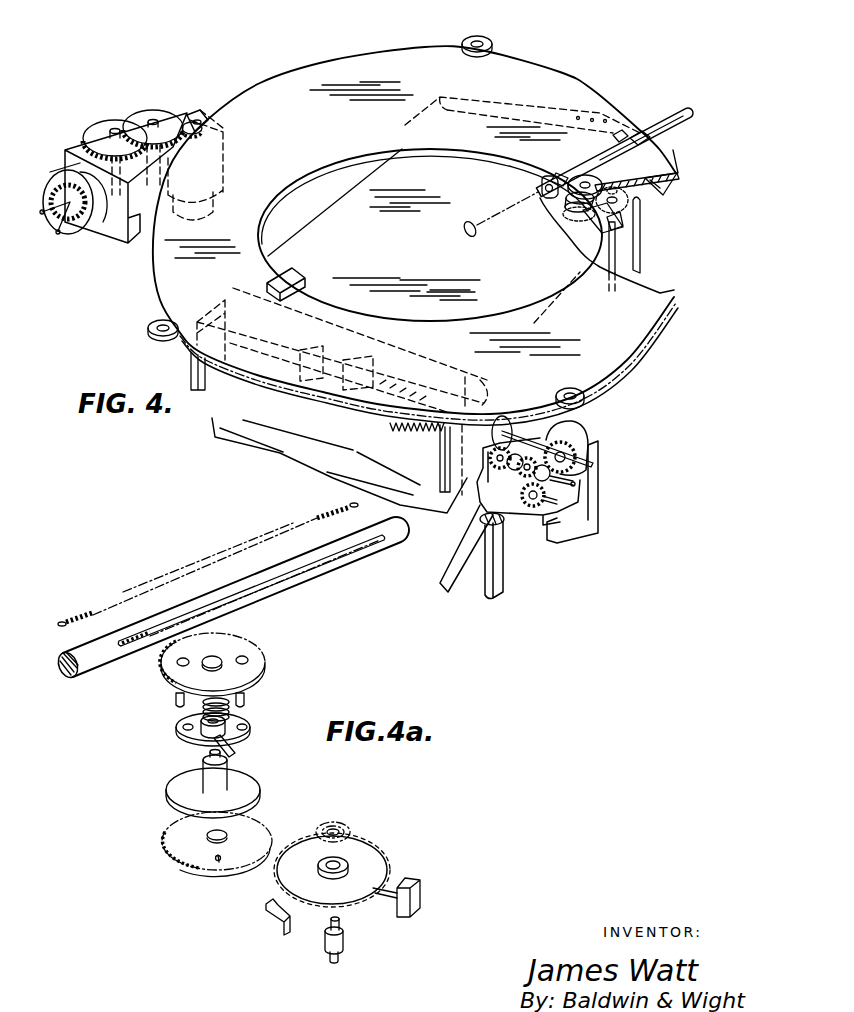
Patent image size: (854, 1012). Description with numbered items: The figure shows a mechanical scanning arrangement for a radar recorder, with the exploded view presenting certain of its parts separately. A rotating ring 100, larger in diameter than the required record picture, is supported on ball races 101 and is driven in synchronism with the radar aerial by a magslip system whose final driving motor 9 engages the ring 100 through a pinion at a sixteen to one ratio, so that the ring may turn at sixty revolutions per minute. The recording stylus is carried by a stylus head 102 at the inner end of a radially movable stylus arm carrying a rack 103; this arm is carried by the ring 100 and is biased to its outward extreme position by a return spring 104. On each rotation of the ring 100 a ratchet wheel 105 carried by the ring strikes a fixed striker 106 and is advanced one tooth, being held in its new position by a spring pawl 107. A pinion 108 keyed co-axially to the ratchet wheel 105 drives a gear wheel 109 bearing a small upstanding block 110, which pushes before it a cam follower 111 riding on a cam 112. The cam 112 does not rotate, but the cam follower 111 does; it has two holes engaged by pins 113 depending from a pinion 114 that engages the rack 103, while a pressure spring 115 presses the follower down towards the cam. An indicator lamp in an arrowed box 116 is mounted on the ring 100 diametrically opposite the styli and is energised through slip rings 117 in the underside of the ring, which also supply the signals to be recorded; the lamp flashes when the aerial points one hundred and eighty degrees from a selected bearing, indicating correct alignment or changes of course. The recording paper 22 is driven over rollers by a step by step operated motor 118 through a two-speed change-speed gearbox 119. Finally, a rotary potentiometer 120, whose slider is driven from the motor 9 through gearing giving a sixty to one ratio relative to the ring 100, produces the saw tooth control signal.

In FIG. 4, the final driving motor 9 is at (224, 165).
In FIG. 4, the recording paper 22 is at (212, 422).
In FIG. 4, the ring 100 is at (627, 358).
In FIG. 4, the ball races 101 is at (494, 43).
In FIG. 4, the stylus head 102 is at (541, 186).
In FIG. 4, the rack 103 is at (609, 163).
In FIG. 4a, the rack 103 is at (133, 643).
In FIG. 4a, the return spring 104 is at (88, 613).
In FIG. 4, the ratchet wheel 105 is at (624, 205).
In FIG. 4a, the ratchet wheel 105 is at (372, 858).
In FIG. 4, the fixed striker 106 is at (621, 208).
In FIG. 4a, the fixed striker 106 is at (395, 897).
In FIG. 4, the spring pawl 107 is at (598, 232).
In FIG. 4a, the spring pawl 107 is at (267, 917).
In FIG. 4, the pinion 108 is at (613, 189).
In FIG. 4a, the pinion 108 is at (349, 826).
In FIG. 4, the gear wheel 109 is at (565, 215).
In FIG. 4a, the gear wheel 109 is at (178, 837).
In FIG. 4, the upstanding block 110 is at (605, 228).
In FIG. 4a, the upstanding block 110 is at (216, 862).
In FIG. 4a, the cam follower 111 is at (236, 752).
In FIG. 4, the cam 112 is at (566, 203).
In FIG. 4a, the cam 112 is at (250, 789).
In FIG. 4a, the pins 113 is at (178, 700).
In FIG. 4, the pinion 114 is at (576, 178).
In FIG. 4a, the pinion 114 is at (248, 653).
In FIG. 4a, the pressure spring 115 is at (207, 705).
In FIG. 4, the indicator lamp unit 116 is at (295, 273).
In FIG. 4, the slip rings 117 is at (652, 182).
In FIG. 4, the step by step operated motor 118 is at (592, 438).
In FIG. 4, the two-speed change-speed gearbox 119 is at (510, 502).
In FIG. 4, the rotary potentiometer 120 is at (80, 232).